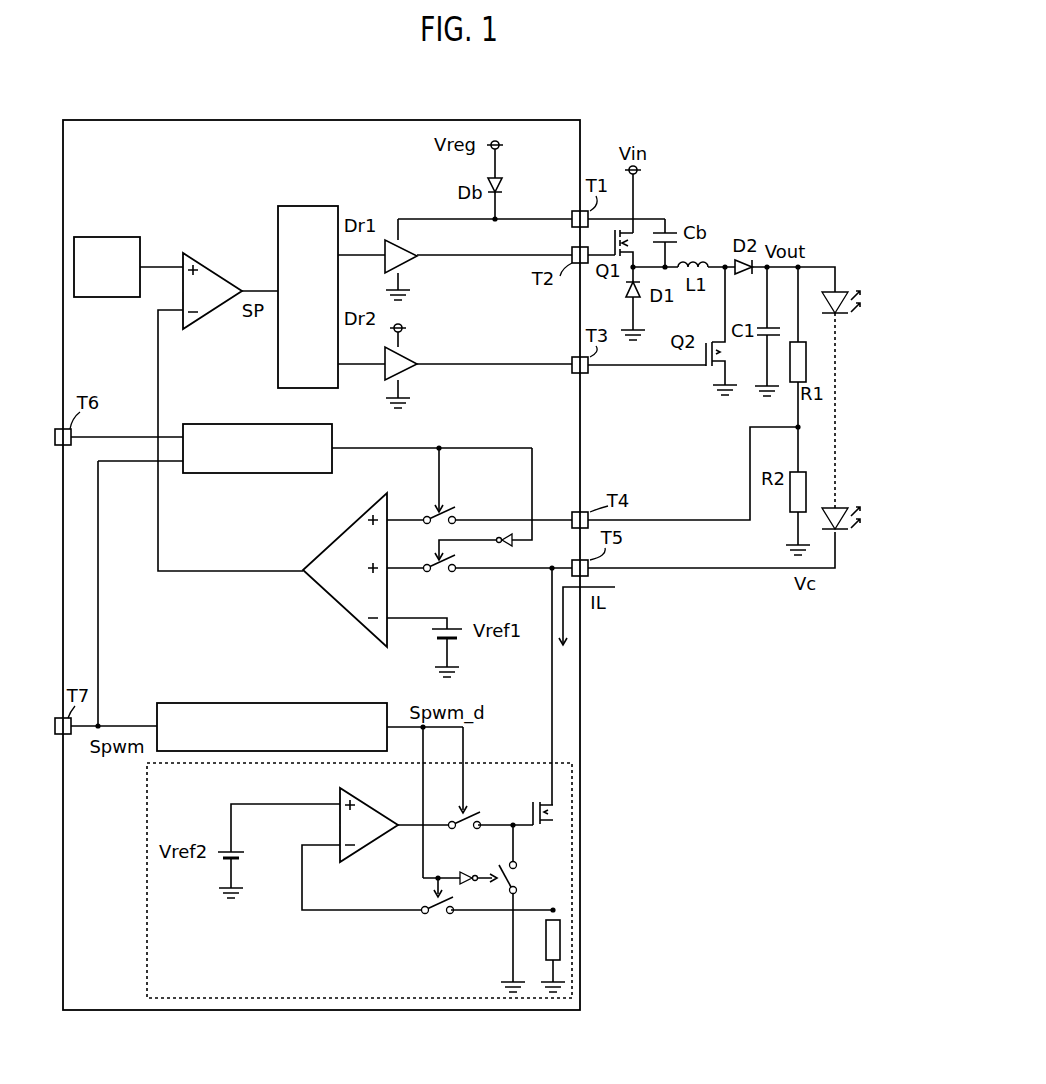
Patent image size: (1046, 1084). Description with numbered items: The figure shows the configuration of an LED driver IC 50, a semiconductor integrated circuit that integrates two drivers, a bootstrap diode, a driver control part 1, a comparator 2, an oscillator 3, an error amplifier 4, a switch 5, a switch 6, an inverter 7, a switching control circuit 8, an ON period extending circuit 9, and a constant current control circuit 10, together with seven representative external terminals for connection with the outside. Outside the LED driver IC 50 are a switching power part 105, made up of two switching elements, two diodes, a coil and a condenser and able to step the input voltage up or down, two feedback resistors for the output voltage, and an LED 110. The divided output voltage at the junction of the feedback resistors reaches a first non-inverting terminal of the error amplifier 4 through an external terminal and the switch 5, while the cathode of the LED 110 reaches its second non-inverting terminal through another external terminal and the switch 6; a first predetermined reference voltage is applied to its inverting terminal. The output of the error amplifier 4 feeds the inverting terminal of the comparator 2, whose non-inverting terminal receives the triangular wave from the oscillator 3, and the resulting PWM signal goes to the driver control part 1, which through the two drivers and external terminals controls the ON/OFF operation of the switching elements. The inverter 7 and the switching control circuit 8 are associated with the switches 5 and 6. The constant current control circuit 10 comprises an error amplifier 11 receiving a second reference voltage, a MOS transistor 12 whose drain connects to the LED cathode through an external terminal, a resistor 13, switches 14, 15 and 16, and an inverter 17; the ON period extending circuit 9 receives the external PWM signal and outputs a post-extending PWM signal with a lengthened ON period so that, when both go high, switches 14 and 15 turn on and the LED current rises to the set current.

The LED driver IC 50 is at (133, 120).
The driver control part 1 is at (329, 206).
The comparator 2 is at (207, 263).
The oscillator 3 is at (133, 236).
The error amplifier 4 is at (350, 526).
The switch 5 is at (428, 512).
The switch 6 is at (432, 576).
The inverter 7 is at (506, 555).
The switching control circuit 8 is at (203, 424).
The ON period extending circuit 9 is at (180, 703).
The constant current control circuit 10 is at (513, 763).
The error amplifier 11 is at (366, 801).
The MOS transistor 12 is at (531, 809).
The resistor 13 is at (547, 956).
The switch 14 is at (455, 814).
The switch 15 is at (438, 920).
The switch 16 is at (523, 873).
The inverter 17 is at (472, 863).
The switching power part 105 is at (725, 228).
The LED 110 is at (843, 268).